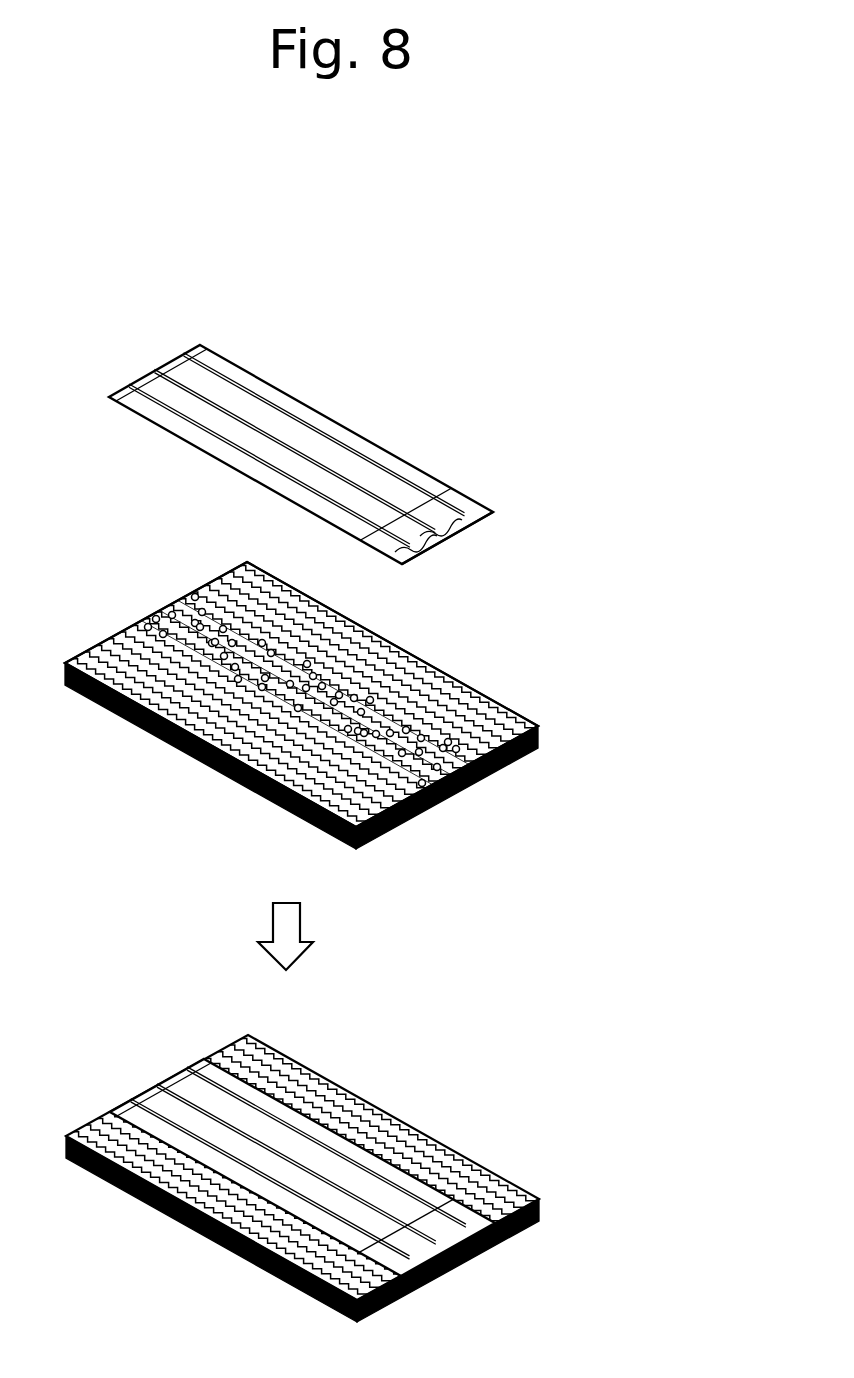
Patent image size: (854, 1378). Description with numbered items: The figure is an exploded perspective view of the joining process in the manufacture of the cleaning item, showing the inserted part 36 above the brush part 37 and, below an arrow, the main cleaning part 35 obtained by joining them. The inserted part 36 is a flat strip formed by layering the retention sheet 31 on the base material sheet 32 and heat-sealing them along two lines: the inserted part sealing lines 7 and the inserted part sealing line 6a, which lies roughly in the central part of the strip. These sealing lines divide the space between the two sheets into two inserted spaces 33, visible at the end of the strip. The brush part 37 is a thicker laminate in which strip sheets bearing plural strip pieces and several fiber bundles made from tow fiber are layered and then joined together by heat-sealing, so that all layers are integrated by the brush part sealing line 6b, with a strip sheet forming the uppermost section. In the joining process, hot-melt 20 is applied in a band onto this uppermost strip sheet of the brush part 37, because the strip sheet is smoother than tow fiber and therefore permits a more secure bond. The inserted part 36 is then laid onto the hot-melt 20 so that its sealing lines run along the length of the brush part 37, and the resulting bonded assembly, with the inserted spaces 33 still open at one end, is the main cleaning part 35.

The inserted part sealing line 6a is at (278, 440).
The brush part sealing line 6b is at (163, 612).
The inserted part sealing line 7 is at (372, 468).
The hot-melt 20 is at (192, 597).
The retention sheet 31 is at (438, 488).
The base material sheet 32 is at (470, 508).
The inserted spaces 33 is at (402, 522).
The main cleaning part 35 is at (142, 1217).
The inserted part 36 is at (138, 437).
The brush part 37 is at (138, 750).